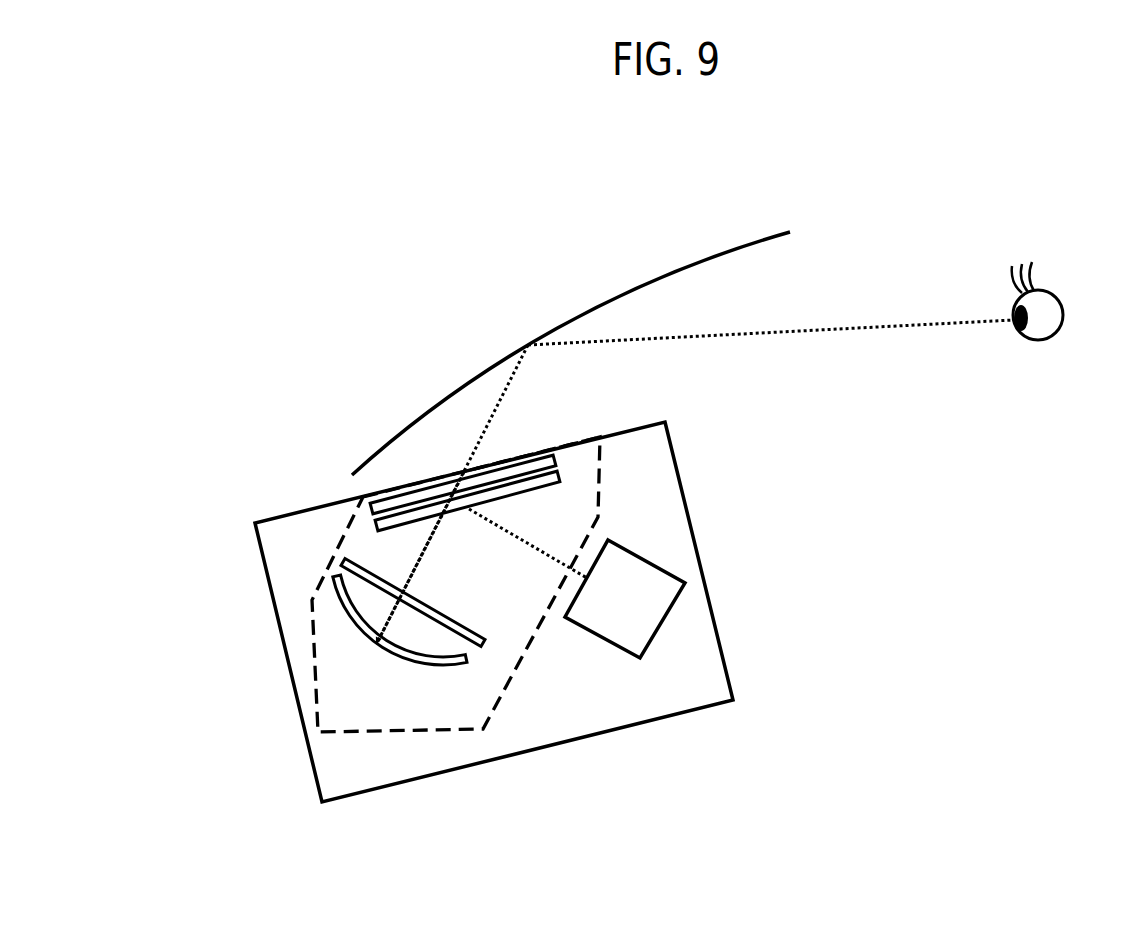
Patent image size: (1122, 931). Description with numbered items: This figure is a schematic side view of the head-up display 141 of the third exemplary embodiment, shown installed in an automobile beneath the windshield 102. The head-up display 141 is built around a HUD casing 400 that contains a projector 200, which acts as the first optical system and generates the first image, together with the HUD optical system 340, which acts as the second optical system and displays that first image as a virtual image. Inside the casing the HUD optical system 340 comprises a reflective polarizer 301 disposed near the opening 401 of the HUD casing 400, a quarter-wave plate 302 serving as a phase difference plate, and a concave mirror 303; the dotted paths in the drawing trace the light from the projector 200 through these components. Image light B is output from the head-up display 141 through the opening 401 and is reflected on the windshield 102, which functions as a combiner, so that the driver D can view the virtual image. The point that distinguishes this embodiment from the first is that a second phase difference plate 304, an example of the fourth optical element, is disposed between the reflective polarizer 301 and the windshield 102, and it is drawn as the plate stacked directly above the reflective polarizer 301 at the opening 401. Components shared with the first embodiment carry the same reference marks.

The windshield 102 is at (638, 287).
The head-up display 141 is at (678, 657).
The projector 200 is at (675, 605).
The reflective polarizer 301 is at (559, 477).
The quarter-wave plate 302 is at (340, 557).
The concave mirror 303 is at (342, 616).
The second phase difference plate 304 is at (366, 508).
The HUD optical system 340 is at (387, 733).
The HUD casing 400 is at (550, 777).
The opening 401 is at (516, 455).
The image light B is at (524, 542).
The driver D is at (1048, 318).